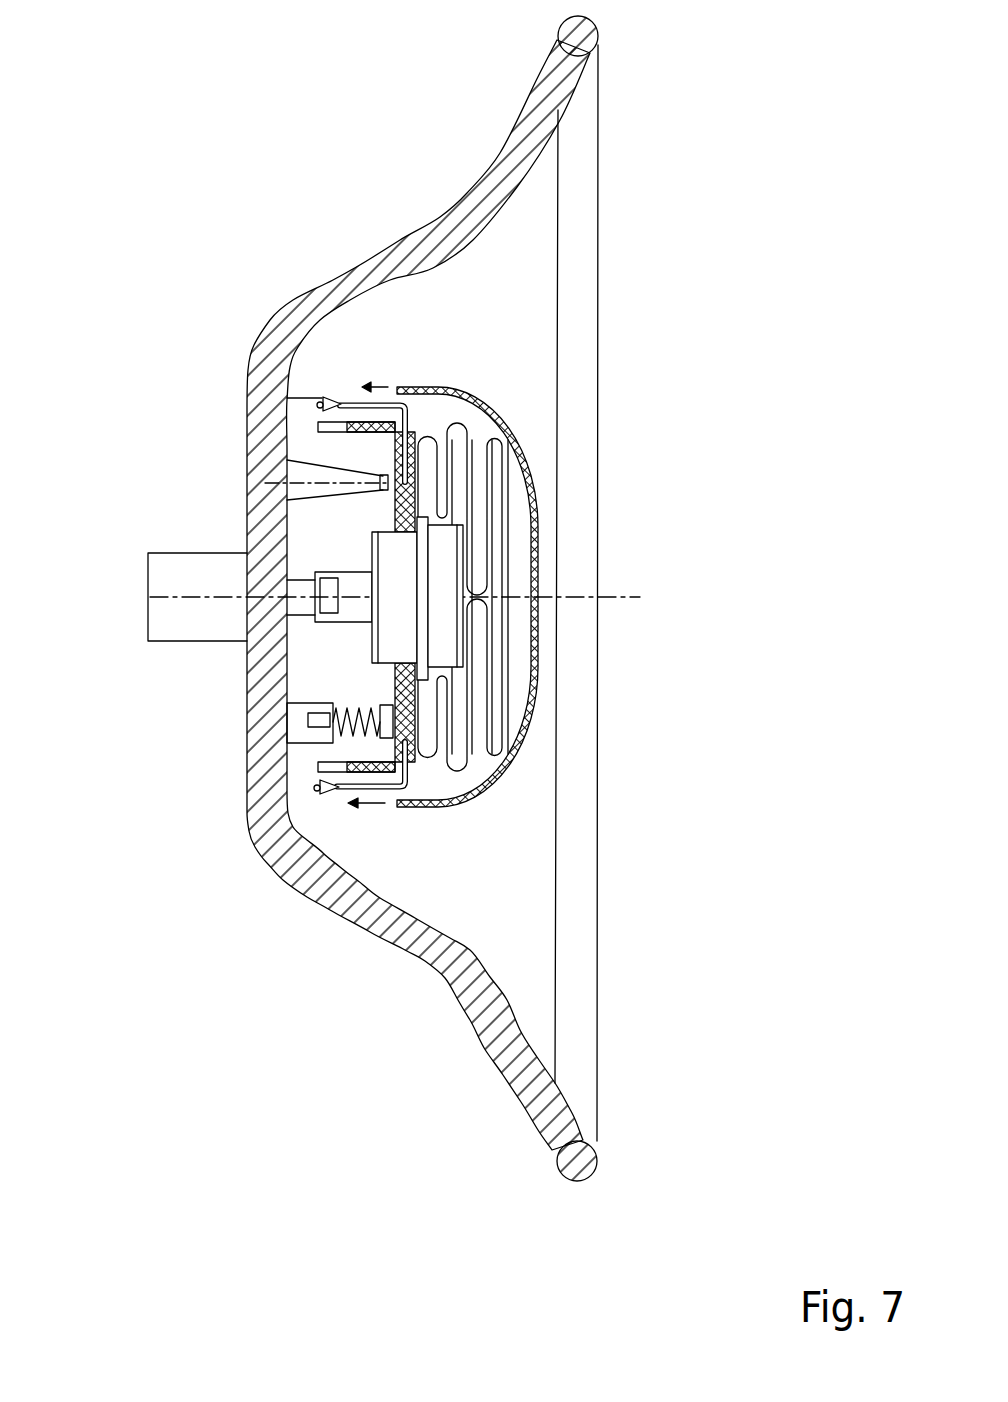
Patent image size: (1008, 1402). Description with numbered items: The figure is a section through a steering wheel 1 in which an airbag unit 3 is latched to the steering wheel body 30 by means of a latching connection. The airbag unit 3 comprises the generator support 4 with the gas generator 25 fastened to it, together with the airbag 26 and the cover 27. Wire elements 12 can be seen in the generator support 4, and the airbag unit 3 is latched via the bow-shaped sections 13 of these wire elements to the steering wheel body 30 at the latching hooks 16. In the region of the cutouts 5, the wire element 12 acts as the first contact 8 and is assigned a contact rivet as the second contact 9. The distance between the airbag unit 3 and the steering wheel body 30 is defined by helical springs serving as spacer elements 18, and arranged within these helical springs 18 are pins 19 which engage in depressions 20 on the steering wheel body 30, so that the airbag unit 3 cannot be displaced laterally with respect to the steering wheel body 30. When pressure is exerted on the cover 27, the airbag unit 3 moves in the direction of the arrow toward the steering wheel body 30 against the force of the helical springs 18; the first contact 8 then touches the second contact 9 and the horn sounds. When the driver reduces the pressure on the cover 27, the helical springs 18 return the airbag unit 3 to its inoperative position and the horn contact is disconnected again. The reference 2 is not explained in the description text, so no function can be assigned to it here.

The steering wheel 1 is at (686, 293).
The reflector body 2 is at (270, 492).
The airbag unit 3 is at (538, 465).
The generator support 4 is at (425, 427).
The cutouts 5 is at (395, 508).
The first contact 8 is at (382, 476).
The second contact 9 is at (388, 494).
The wire elements 12 is at (394, 450).
The bow-shaped sections 13 is at (362, 402).
The latching hooks 16 is at (318, 403).
The spacer elements 18 is at (380, 722).
The pins 19 is at (316, 717).
The depressions 20 is at (350, 722).
The gas generator 25 is at (440, 581).
The airbag 26 is at (508, 548).
The cover 27 is at (538, 517).
The steering wheel body 30 is at (376, 258).